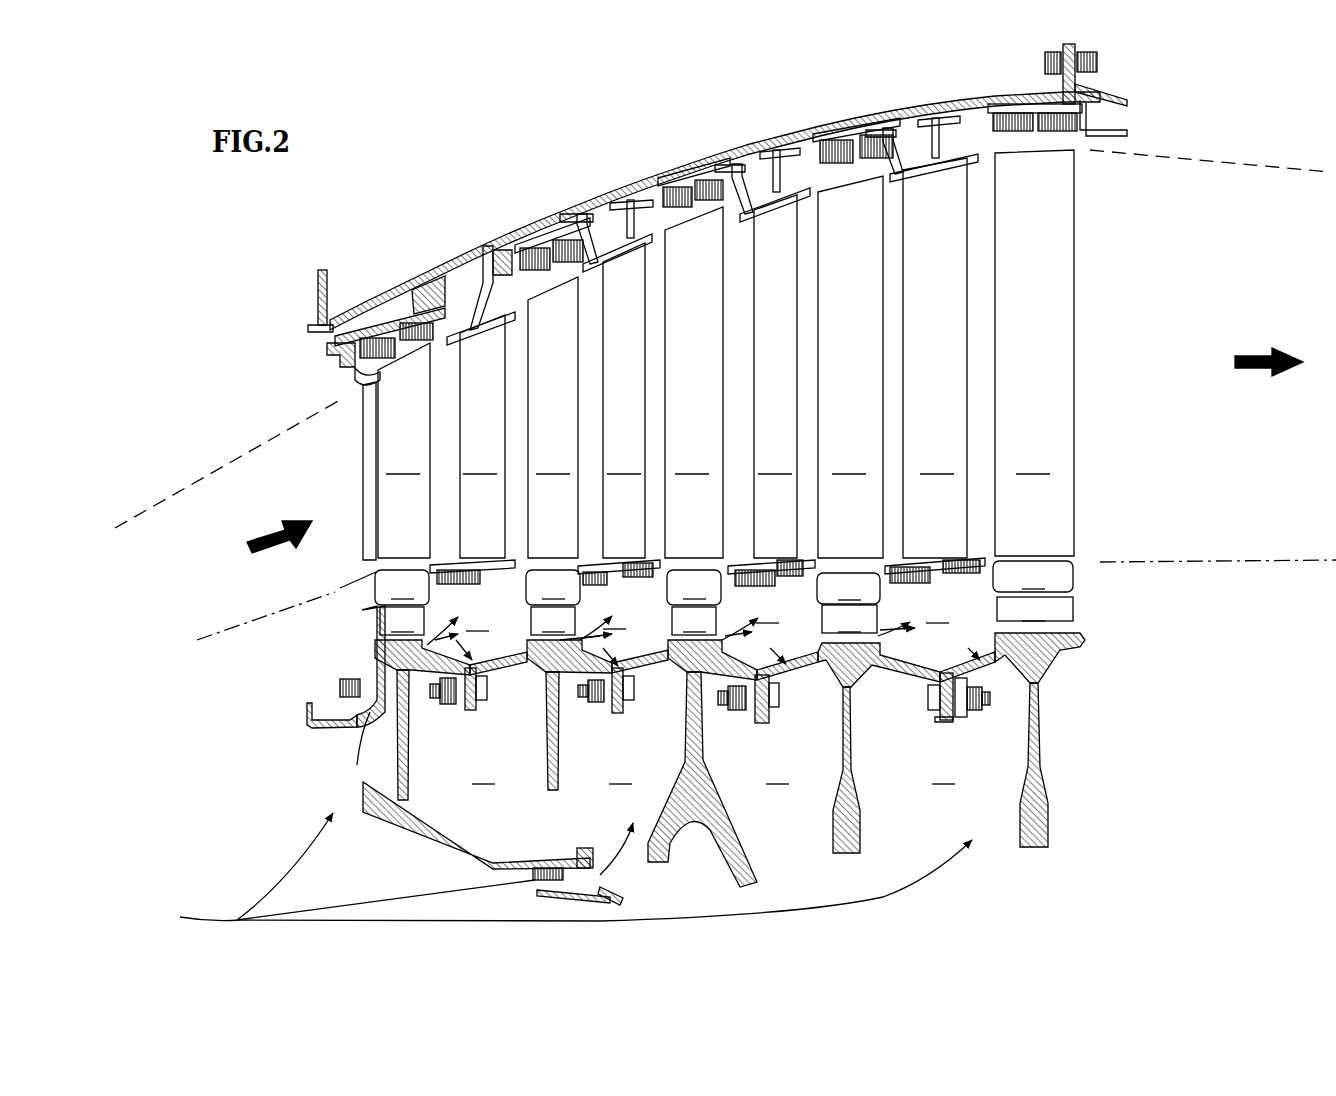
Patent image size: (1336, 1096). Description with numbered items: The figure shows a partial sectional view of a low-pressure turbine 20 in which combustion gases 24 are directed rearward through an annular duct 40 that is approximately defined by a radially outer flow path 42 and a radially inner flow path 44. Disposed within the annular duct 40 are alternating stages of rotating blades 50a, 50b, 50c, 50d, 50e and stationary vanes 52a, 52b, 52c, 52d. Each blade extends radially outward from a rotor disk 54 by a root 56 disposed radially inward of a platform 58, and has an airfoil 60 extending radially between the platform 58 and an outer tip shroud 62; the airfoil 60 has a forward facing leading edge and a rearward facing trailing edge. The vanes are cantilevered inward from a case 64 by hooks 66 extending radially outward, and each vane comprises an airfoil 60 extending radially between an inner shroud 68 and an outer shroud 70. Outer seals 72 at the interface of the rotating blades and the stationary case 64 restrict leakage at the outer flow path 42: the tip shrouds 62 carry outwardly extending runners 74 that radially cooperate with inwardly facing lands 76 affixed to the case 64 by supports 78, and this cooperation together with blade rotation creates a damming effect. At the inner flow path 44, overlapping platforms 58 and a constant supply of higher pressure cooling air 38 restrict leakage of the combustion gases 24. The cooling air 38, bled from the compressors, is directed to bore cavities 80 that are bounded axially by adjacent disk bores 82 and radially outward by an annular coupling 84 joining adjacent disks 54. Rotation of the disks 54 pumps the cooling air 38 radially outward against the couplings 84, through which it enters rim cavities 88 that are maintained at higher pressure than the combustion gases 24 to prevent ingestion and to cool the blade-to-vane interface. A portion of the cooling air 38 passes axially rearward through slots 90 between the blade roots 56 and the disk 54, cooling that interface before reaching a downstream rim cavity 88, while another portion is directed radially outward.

The low-pressure turbine 20 is at (435, 182).
The combustion gases 24 is at (1248, 352).
The cooling air 38 is at (328, 848).
The annular duct 40 is at (362, 484).
The radially outer flow path 42 is at (250, 433).
The radially inner flow path 44 is at (235, 640).
The rotating blade 50a is at (404, 450).
The rotating blade 50b is at (553, 417).
The rotating blade 50c is at (694, 382).
The rotating blade 50d is at (850, 367).
The rotating blade 50e is at (1034, 353).
The stationary vane 52a is at (472, 415).
The stationary vane 52b is at (610, 392).
The stationary vane 52c is at (765, 367).
The stationary vane 52d is at (925, 349).
The rotor disk 54 is at (418, 642).
The root 56 is at (726, 615).
The platform 58 is at (724, 583).
The airfoil 60 is at (432, 432).
The outer tip shroud 62 is at (413, 372).
The case 64 is at (822, 128).
The hook 66 is at (582, 204).
The inner shroud 68 is at (637, 557).
The outer shroud 70 is at (640, 252).
The outer seal 72 is at (378, 318).
The runner 74 is at (372, 378).
The land 76 is at (358, 358).
The support 78 is at (390, 308).
The bore cavity 80 is at (713, 772).
The disk bore 82 is at (408, 796).
The annular coupling 84 is at (472, 710).
The rim cavity 88 is at (703, 632).
The slot 90 is at (580, 640).